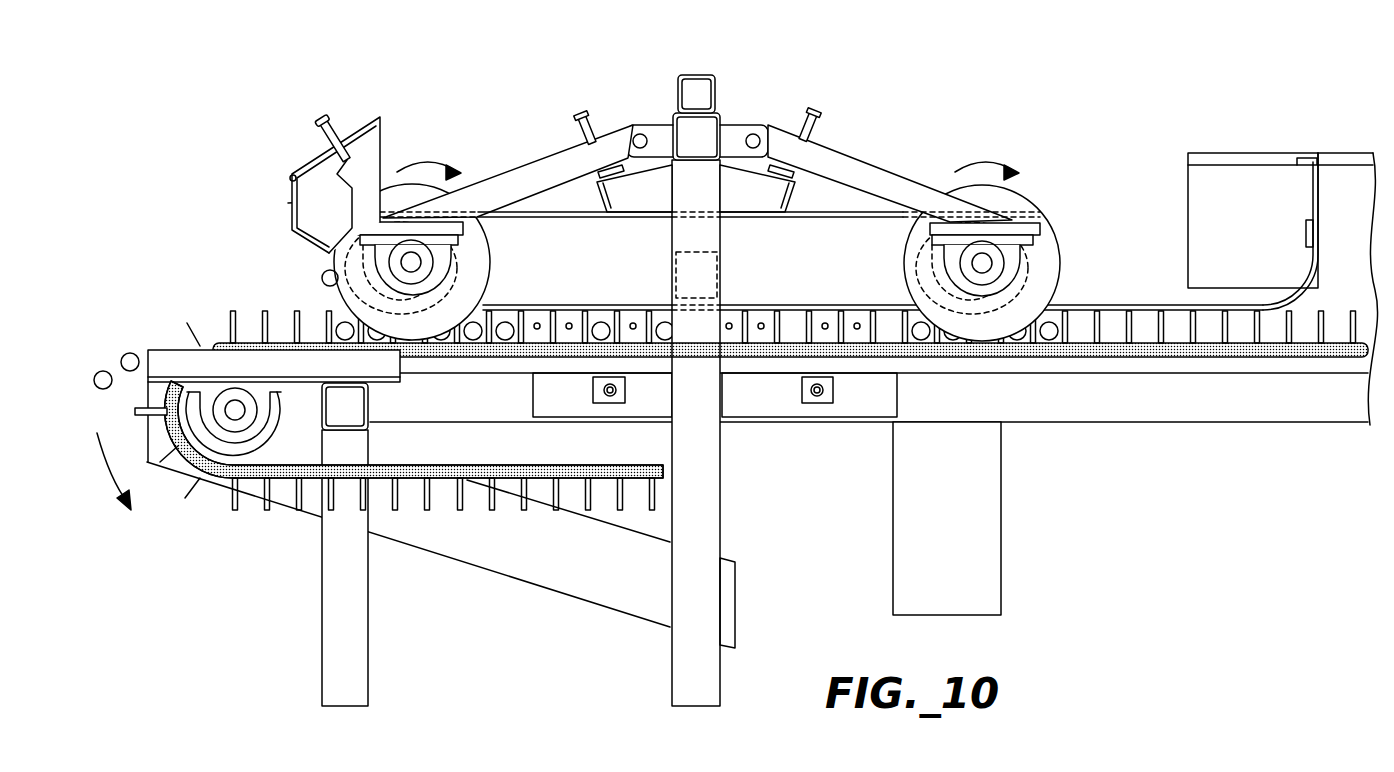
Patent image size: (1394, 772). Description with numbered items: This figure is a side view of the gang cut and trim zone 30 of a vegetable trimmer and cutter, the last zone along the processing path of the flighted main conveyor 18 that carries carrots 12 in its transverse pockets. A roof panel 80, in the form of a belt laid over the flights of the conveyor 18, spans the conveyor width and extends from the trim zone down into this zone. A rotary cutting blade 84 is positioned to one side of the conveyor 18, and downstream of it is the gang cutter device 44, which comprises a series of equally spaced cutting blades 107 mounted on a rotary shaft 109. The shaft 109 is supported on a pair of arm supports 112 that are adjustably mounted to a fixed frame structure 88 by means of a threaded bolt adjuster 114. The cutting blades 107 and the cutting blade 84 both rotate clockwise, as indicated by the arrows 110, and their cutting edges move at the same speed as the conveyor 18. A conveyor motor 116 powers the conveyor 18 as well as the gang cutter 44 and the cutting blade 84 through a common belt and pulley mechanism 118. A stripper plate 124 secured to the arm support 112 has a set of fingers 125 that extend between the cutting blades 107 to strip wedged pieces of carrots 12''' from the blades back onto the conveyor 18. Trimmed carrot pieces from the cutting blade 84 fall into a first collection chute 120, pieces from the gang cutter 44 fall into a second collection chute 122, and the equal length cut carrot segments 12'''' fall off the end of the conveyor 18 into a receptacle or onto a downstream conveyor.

The gang cut and trim zone 30 is at (537, 84).
The gang cutter device 44 is at (392, 193).
The arrows 110 is at (416, 170).
The arm supports 112 is at (500, 187).
The threaded bolt adjuster 114 is at (583, 116).
The frame structure 88 is at (716, 118).
The stripper plate 124 is at (284, 186).
The fingers 125 is at (286, 203).
The wedged pieces of carrots 12''' is at (293, 265).
The carrots 12 is at (677, 310).
The main conveyor 18 is at (247, 320).
The equal length cut carrot segments 12'''' is at (96, 355).
The cutting blades 107 is at (472, 262).
The rotary shaft 109 is at (425, 268).
The roof panel 80 is at (637, 303).
The common belt and pulley mechanism 118 is at (823, 220).
The rotary cutting blade 84 is at (1045, 226).
The conveyor motor 116 is at (222, 437).
The first collection chute 120 is at (997, 531).
The second collection chute 122 is at (598, 597).